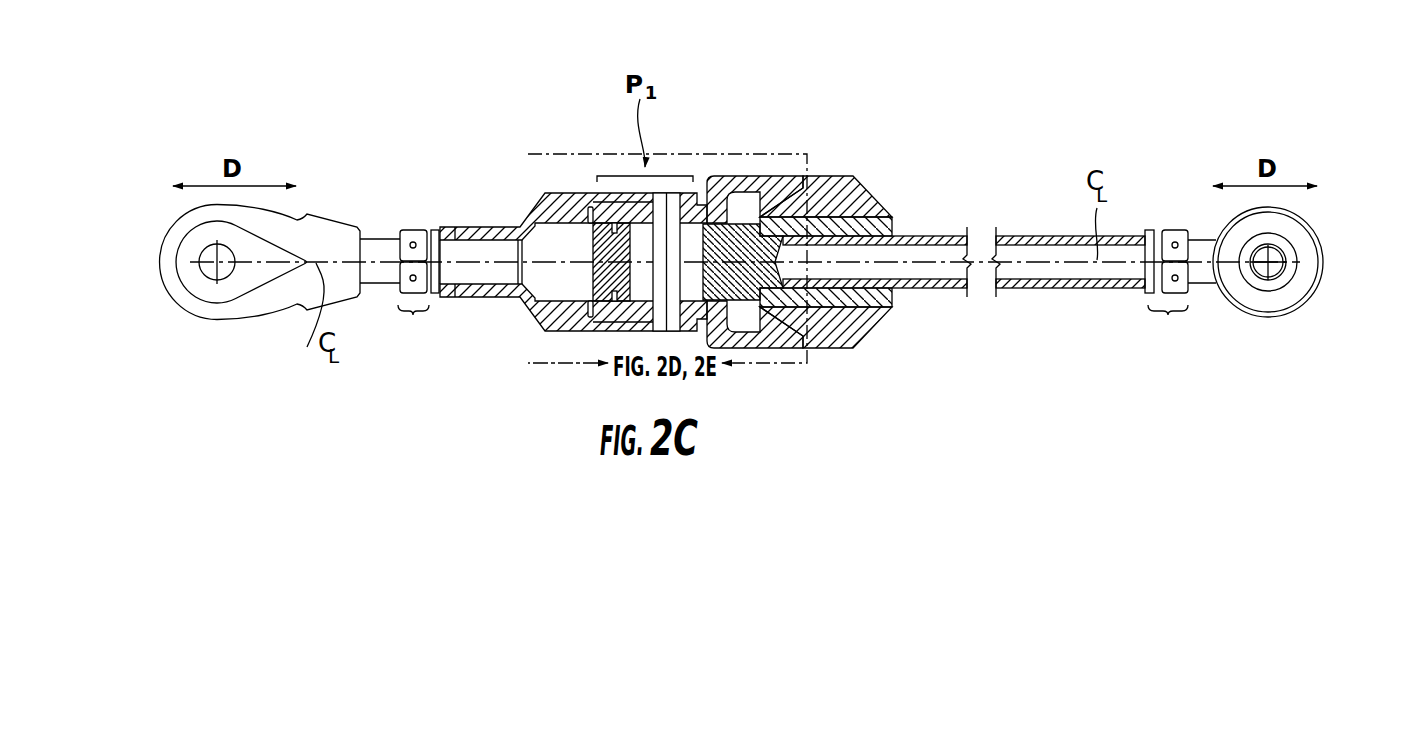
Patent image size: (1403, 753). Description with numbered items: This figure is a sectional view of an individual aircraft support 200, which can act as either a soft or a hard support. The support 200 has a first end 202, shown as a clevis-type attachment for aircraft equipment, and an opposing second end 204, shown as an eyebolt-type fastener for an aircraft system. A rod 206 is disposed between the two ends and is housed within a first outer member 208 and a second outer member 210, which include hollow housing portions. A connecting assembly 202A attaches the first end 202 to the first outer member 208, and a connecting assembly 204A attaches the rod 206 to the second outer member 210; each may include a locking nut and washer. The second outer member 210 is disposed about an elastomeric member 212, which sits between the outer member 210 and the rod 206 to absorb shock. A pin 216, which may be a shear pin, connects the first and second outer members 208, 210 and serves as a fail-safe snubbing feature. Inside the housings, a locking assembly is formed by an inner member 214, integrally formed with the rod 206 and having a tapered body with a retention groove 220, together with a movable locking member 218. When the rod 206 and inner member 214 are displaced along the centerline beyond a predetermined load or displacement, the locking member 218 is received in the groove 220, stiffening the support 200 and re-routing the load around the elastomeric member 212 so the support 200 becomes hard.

The support 200 is at (388, 88).
The first end 202 is at (208, 333).
The connecting assembly 202A is at (414, 289).
The second end 204 is at (1268, 334).
The connecting assembly 204A is at (1168, 290).
The rod 206 is at (947, 291).
The first outer member 208 is at (535, 205).
The second outer member 210 is at (826, 176).
The elastomeric member 212 is at (853, 202).
The inner member 214 is at (600, 277).
The pin 216 is at (673, 312).
The locking member 218 is at (590, 210).
The retention groove 220 is at (614, 217).